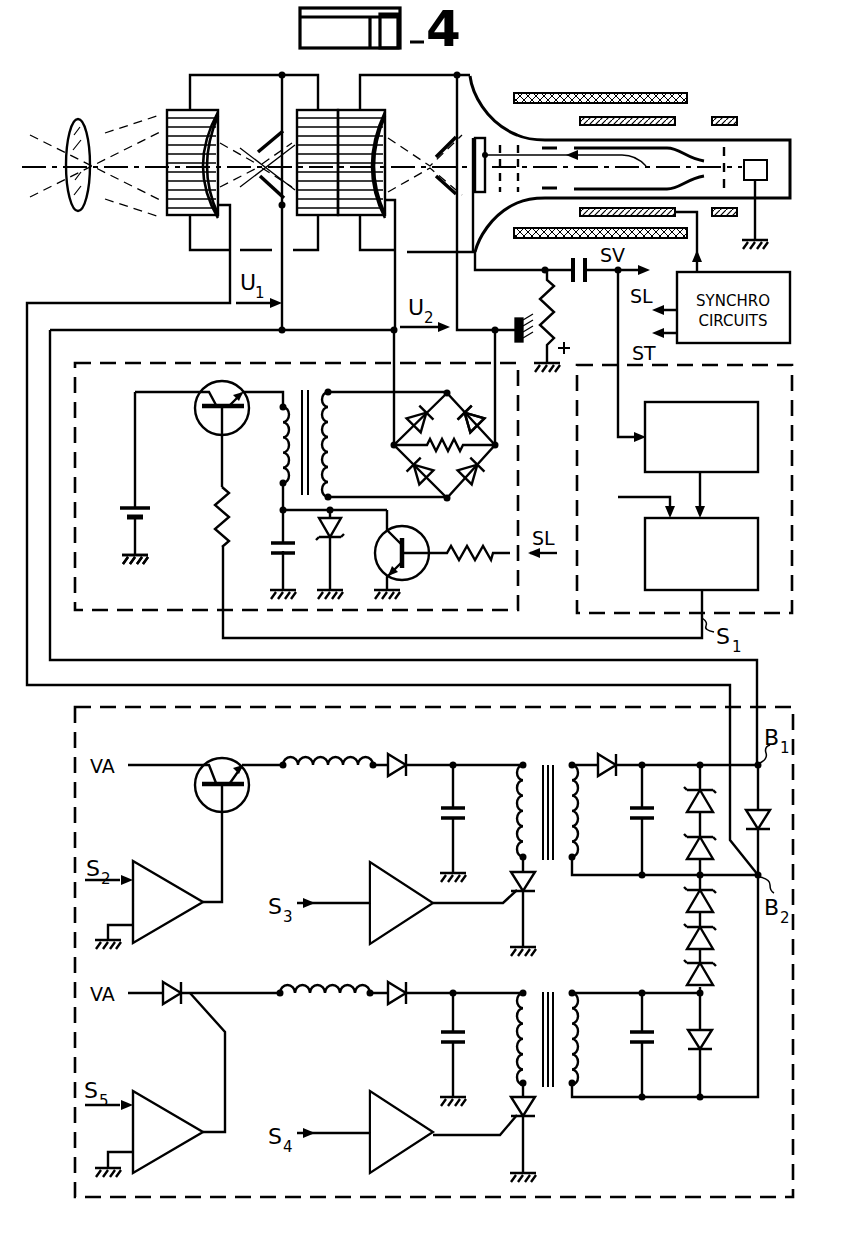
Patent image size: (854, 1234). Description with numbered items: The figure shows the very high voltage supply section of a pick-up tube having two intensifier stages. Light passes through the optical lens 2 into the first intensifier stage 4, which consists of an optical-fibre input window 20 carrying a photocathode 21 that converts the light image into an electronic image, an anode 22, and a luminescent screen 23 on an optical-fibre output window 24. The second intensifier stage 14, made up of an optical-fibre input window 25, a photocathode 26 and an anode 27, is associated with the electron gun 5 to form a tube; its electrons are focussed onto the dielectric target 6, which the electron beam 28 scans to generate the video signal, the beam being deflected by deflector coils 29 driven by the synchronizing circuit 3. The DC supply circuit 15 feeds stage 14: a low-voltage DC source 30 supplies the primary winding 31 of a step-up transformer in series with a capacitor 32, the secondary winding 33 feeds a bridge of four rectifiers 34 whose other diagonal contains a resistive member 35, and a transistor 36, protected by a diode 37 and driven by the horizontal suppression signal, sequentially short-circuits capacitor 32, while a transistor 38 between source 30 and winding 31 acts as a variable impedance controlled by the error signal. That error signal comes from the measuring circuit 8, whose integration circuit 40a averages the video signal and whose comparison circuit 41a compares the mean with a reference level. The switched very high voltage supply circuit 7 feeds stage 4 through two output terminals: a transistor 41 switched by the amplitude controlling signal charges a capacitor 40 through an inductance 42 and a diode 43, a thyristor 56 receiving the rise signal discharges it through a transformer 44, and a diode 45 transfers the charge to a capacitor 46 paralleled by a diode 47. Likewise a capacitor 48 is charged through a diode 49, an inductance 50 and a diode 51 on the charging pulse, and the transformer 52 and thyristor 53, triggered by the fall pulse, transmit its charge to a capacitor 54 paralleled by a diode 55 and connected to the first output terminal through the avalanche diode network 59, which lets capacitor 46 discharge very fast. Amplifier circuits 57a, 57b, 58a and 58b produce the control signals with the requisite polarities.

The optical lens 2 is at (82, 135).
The synchronizing circuit 3 is at (723, 272).
The first intensifier stage 4 is at (217, 75).
The electron gun 5 is at (481, 104).
The dielectric target 6 is at (458, 148).
The switched very high voltage supply circuit 7 is at (72, 752).
The measuring circuit 8 is at (665, 490).
The second intensifier stage 14 is at (370, 75).
The DC supply circuit 15 is at (114, 612).
The optical-fibre input window 20 is at (180, 212).
The photocathode 21 is at (222, 144).
The anode 22 is at (271, 180).
The luminescent screen 23 is at (285, 132).
The optical-fibre output window 24 is at (323, 217).
The optical-fibre input window 25 is at (356, 215).
The photocathode 26 is at (387, 144).
The anode 27 is at (442, 182).
The electron beam 28 is at (530, 142).
The deflector coils 29 is at (676, 122).
The low-voltage DC source 30 is at (140, 518).
The primary winding 31 is at (277, 447).
The capacitor 32 is at (270, 546).
The secondary winding 33 is at (334, 450).
The rectifiers 34 is at (478, 490).
The resistive member 35 is at (446, 422).
The transistor 36 is at (406, 530).
The diode 37 is at (318, 546).
The transistor 38 is at (198, 413).
The capacitor 40 is at (440, 812).
The integration circuit 40a is at (729, 384).
The transistor 41 is at (212, 770).
The comparison circuit 41a is at (729, 500).
The inductance 42 is at (323, 759).
The diode 43 is at (396, 753).
The transformer 44 is at (544, 764).
The diode 45 is at (604, 764).
The capacitor 46 is at (640, 824).
The diode 47 is at (770, 822).
The capacitor 48 is at (440, 1032).
The diode 49 is at (176, 982).
The inductance 50 is at (324, 984).
The diode 51 is at (396, 982).
The transformer 52 is at (547, 990).
The thyristor 53 is at (537, 1107).
The capacitor 54 is at (640, 1046).
The diode 55 is at (712, 1042).
The thyristor 56 is at (537, 882).
The amplifier circuit 57a is at (172, 882).
The amplifier circuit 57b is at (406, 884).
The amplifier circuit 58a is at (176, 1116).
The amplifier circuit 58b is at (408, 1120).
The avalanche diode network 59 is at (686, 938).